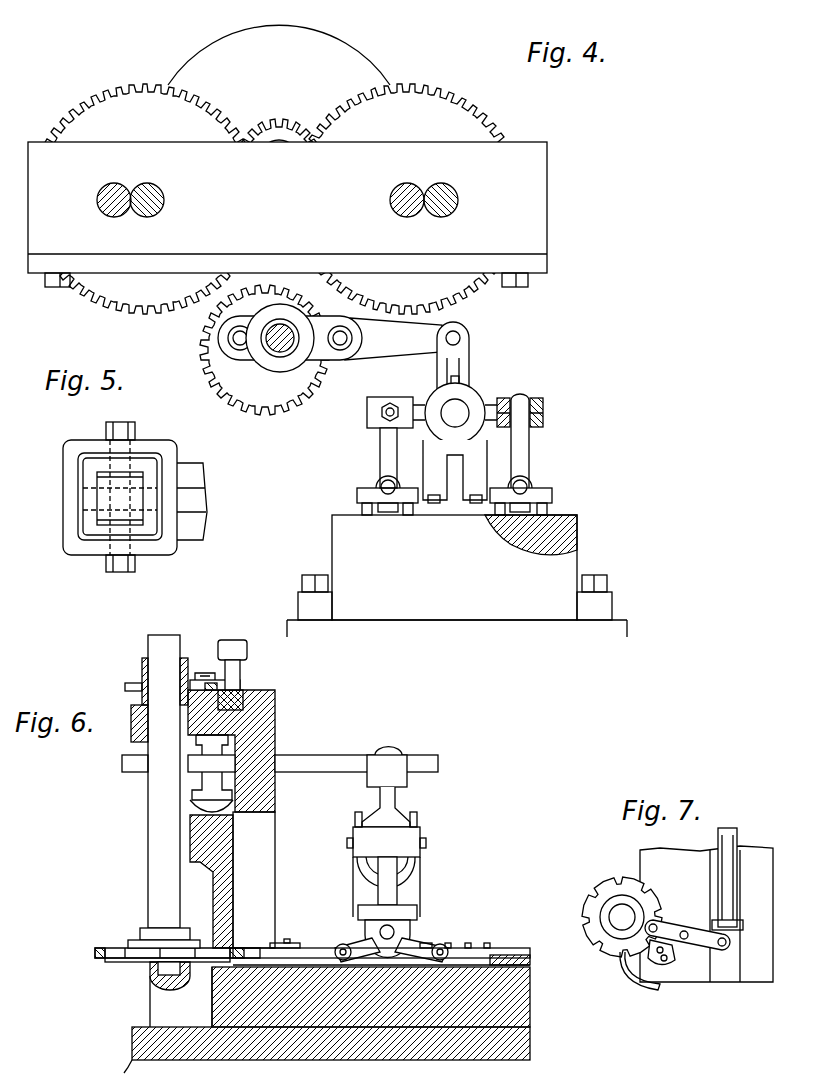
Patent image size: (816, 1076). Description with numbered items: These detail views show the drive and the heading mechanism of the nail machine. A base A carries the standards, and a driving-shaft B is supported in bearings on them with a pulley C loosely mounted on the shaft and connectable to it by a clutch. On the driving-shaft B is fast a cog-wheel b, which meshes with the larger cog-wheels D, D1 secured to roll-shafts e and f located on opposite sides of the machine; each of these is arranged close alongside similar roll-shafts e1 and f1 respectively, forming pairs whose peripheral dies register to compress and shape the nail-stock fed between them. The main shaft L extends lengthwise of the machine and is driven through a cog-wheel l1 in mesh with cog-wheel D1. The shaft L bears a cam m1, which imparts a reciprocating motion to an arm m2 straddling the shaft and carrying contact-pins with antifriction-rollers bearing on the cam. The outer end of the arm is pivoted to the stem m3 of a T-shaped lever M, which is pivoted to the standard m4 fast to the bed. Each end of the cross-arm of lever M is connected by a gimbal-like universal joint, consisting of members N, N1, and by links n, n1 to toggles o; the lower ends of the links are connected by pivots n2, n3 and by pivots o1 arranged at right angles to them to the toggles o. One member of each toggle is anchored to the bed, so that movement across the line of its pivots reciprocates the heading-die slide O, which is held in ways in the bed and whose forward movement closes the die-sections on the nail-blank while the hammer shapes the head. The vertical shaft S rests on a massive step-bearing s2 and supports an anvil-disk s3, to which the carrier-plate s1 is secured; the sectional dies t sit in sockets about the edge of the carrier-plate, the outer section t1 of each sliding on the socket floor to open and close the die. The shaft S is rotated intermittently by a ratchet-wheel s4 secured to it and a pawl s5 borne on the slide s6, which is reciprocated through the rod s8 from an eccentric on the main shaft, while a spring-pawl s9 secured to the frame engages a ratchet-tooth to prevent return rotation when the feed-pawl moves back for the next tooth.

In FIG. 4, the base A is at (457, 586).
In FIG. 4, the driving-shaft B is at (290, 132).
In FIG. 4, the pulley C is at (348, 58).
In FIG. 4, the cog-wheel D is at (407, 188).
In FIG. 4, the cog-wheel D1 is at (130, 100).
In FIG. 4, the cog-wheel b is at (273, 118).
In FIG. 4, the roll-shaft e is at (165, 198).
In FIG. 4, the roll-shaft e1 is at (100, 198).
In FIG. 4, the roll-shaft f is at (390, 199).
In FIG. 4, the roll-shaft f1 is at (458, 197).
In FIG. 4, the cog-wheel l1 is at (212, 341).
In FIG. 4, the main shaft L is at (279, 346).
In FIG. 6, the main shaft L is at (316, 765).
In FIG. 4, the cam m1 is at (296, 356).
In FIG. 4, the arm m2 is at (393, 339).
In FIG. 6, the arm m2 is at (390, 754).
In FIG. 4, the stem m3 is at (465, 339).
In FIG. 6, the stem m3 is at (403, 759).
In FIG. 4, the T-shaped lever M is at (467, 357).
In FIG. 6, the T-shaped lever M is at (394, 849).
In FIG. 4, the standard m4 is at (455, 443).
In FIG. 6, the standard m4 is at (415, 896).
In FIG. 4, the universal-joint member N is at (388, 402).
In FIG. 5, the universal-joint member N is at (78, 442).
In FIG. 6, the universal-joint member N is at (410, 843).
In FIG. 4, the universal-joint member N1 is at (530, 398).
In FIG. 5, the universal-joint member N1 is at (143, 462).
In FIG. 4, the link n is at (380, 457).
In FIG. 5, the link n is at (110, 500).
In FIG. 4, the link n1 is at (522, 469).
In FIG. 6, the link n1 is at (392, 883).
In FIG. 4, the pivot n2 is at (384, 485).
In FIG. 4, the pivot n3 is at (528, 495).
In FIG. 6, the pivot n3 is at (358, 916).
In FIG. 4, the toggle o is at (356, 509).
In FIG. 4, the pivot o1 is at (557, 518).
In FIG. 6, the pivot o1 is at (382, 931).
In FIG. 6, the heading-die slide O is at (381, 939).
In FIG. 6, the vertical shaft S is at (152, 828).
In FIG. 7, the vertical shaft S is at (617, 916).
In FIG. 6, the carrier-plate s1 is at (108, 948).
In FIG. 6, the step-bearing s2 is at (152, 990).
In FIG. 6, the anvil-disk s3 is at (148, 936).
In FIG. 6, the ratchet-wheel s4 is at (140, 688).
In FIG. 7, the ratchet-wheel s4 is at (612, 886).
In FIG. 6, the pawl s5 is at (215, 682).
In FIG. 7, the pawl s5 is at (672, 952).
In FIG. 6, the slide s6 is at (255, 696).
In FIG. 7, the slide s6 is at (735, 939).
In FIG. 6, the rod s8 is at (245, 656).
In FIG. 7, the rod s8 is at (730, 838).
In FIG. 7, the spring-pawl s9 is at (637, 981).
In FIG. 6, the sectional die t is at (211, 966).
In FIG. 6, the outer die-section t1 is at (238, 952).